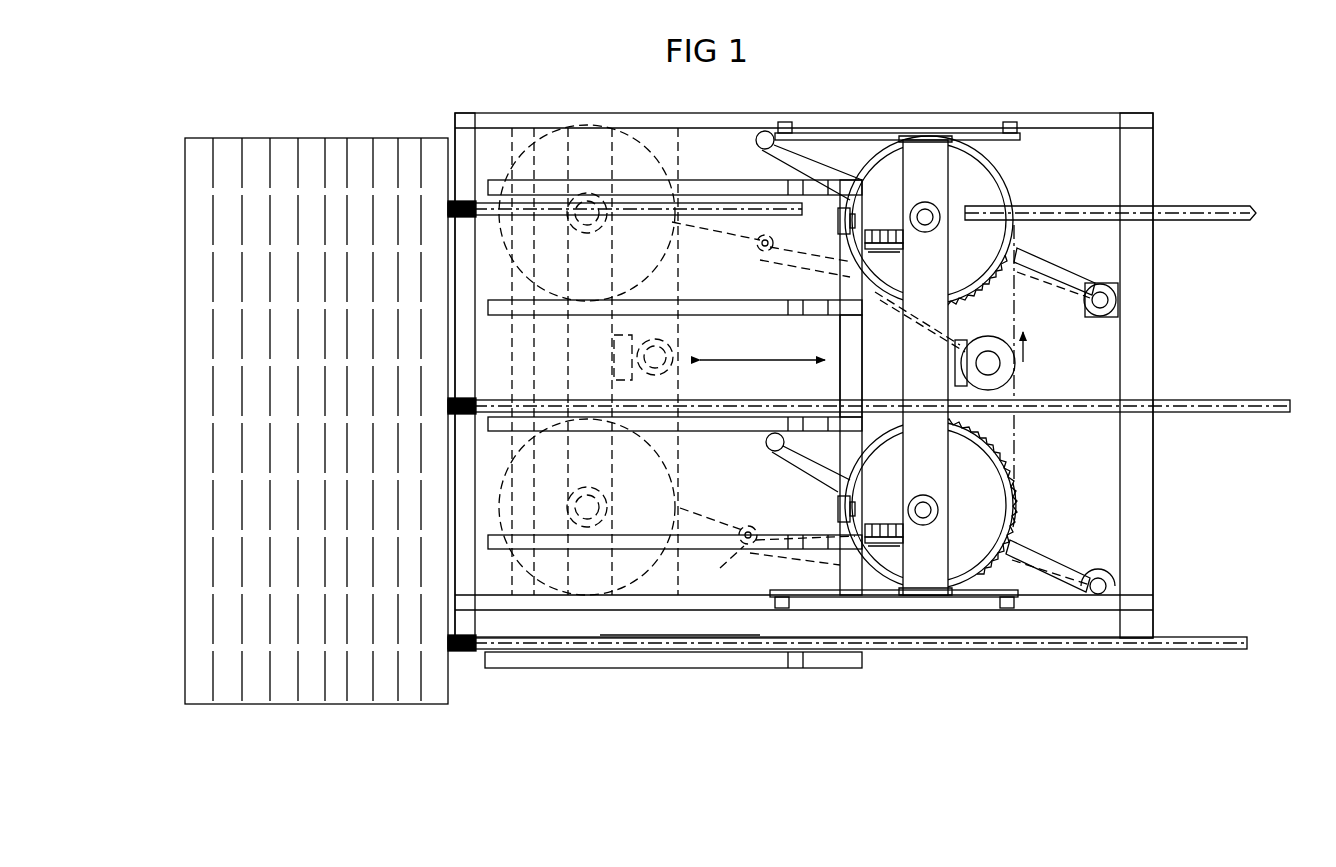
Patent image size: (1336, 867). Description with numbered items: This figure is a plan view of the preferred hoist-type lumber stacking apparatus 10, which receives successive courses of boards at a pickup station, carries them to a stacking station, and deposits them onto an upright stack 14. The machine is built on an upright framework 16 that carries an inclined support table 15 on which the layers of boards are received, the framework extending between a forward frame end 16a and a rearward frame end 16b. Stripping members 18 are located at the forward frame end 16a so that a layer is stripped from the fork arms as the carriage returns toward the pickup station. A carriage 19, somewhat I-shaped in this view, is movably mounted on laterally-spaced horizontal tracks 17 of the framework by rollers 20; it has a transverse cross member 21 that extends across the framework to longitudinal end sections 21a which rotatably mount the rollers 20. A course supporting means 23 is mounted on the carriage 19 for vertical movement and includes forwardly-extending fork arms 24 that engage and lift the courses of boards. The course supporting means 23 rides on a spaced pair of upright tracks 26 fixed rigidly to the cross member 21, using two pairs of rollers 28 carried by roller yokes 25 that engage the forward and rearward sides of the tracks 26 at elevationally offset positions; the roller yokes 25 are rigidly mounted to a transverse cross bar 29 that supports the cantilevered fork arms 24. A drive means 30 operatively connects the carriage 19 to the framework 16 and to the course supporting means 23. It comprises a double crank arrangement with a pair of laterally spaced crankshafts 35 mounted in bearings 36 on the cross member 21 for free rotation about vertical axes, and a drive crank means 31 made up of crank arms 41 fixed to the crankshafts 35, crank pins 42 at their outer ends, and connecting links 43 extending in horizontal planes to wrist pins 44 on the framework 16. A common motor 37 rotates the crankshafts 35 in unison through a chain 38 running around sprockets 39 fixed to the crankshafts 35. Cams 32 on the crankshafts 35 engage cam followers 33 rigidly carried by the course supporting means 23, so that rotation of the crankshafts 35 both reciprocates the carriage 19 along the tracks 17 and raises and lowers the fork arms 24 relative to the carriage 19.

The hoist-type stacking apparatus 10 is at (803, 363).
The upright stack 14 is at (330, 695).
The inclined support table 15 is at (672, 640).
The upright framework 16 is at (803, 363).
The forward frame end 16a is at (468, 490).
The rearward frame end 16b is at (1143, 335).
The horizontal tracks 17 is at (920, 135).
The stripping members 18 is at (448, 208).
The carriage 19 is at (963, 342).
The rollers 20 is at (785, 122).
The transverse cross member 21 is at (939, 342).
The longitudinal end sections 21a is at (960, 138).
The course supporting means 23 is at (793, 387).
The fork arms 24 is at (660, 312).
The roller yokes 25 is at (903, 247).
The upright tracks 26 is at (890, 252).
The rollers 28 is at (880, 230).
The transverse cross bar 29 is at (846, 377).
The drive means 30 is at (1020, 506).
The drive crank means 31 is at (1048, 257).
The cams 32 is at (1000, 192).
The cam followers 33 is at (835, 226).
The crankshafts 35 is at (930, 214).
The bearings 36 is at (938, 222).
The motor 37 is at (1005, 360).
The chain 38 is at (1012, 378).
The sprockets 39 is at (962, 297).
The crank arms 41 is at (790, 153).
The crank pins 42 is at (756, 142).
The connecting links 43 is at (1030, 300).
The wrist pins 44 is at (1102, 308).